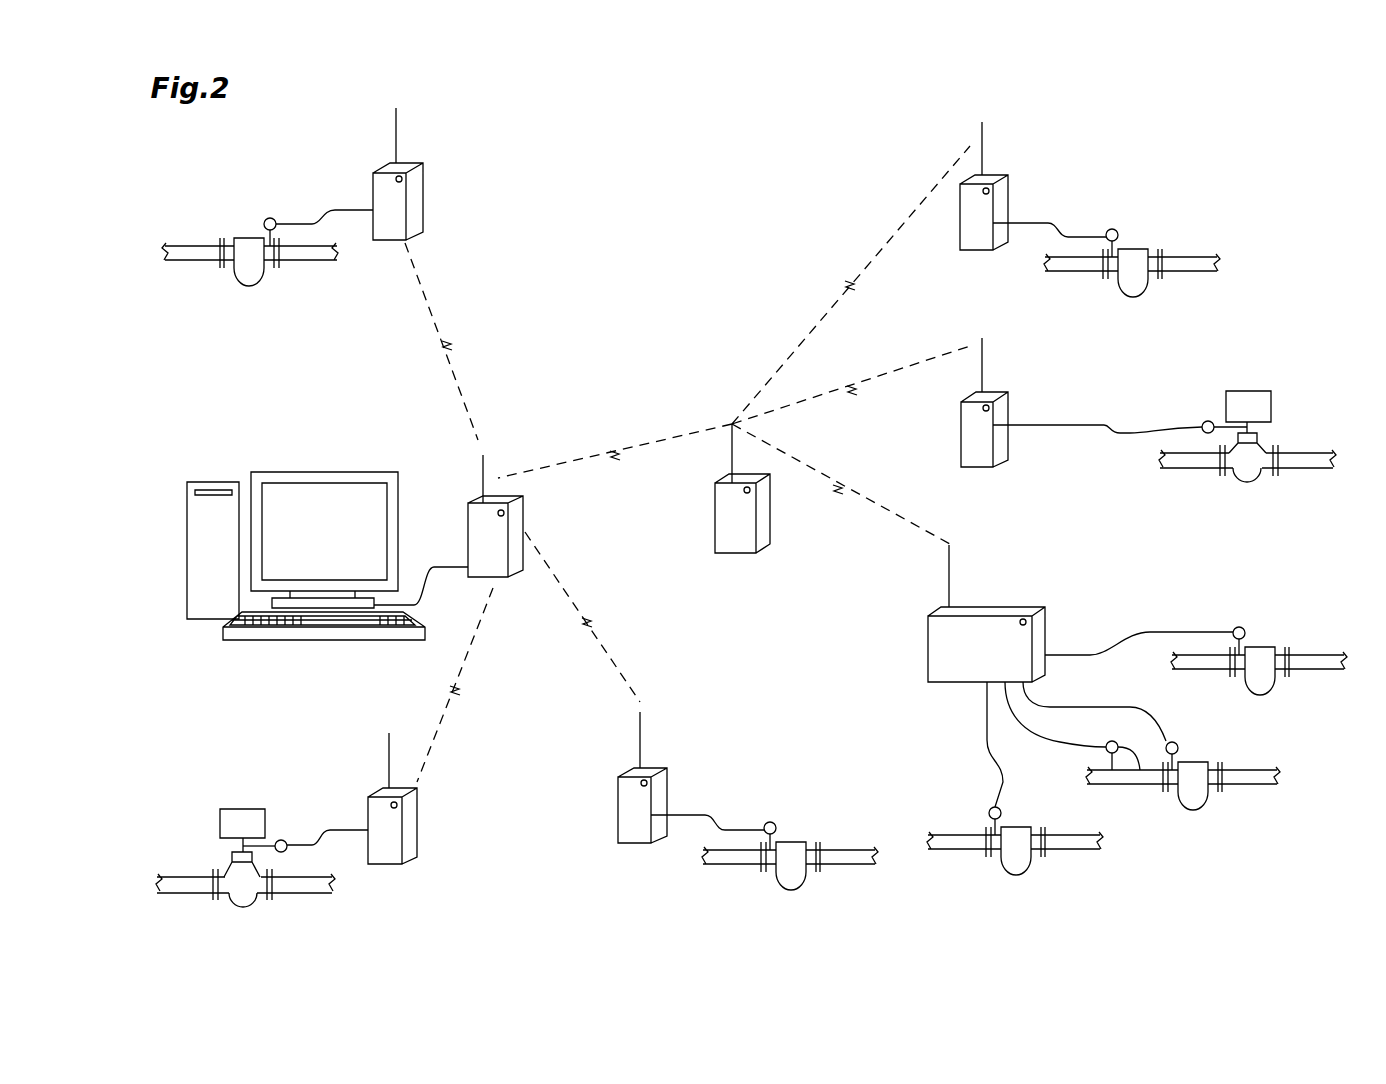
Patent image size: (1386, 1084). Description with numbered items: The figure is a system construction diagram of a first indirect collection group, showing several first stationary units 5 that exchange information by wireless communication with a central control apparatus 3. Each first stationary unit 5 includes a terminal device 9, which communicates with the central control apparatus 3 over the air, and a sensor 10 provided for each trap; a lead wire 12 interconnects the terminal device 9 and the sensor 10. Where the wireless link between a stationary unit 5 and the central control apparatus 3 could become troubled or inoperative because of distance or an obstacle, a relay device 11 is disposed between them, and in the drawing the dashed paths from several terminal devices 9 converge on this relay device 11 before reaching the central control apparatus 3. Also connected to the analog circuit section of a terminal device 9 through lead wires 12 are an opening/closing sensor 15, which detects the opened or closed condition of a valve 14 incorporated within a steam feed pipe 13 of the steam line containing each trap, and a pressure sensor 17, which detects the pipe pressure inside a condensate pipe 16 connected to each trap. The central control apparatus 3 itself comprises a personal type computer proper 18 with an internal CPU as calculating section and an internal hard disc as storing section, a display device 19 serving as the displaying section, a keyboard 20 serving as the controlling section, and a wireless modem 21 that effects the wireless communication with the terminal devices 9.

The central control apparatus 3 is at (306, 528).
The first stationary unit 5 is at (746, 521).
The terminal device 9 is at (413, 198).
The sensor 10 is at (268, 216).
The relay device 11 is at (762, 526).
The lead wire 12 is at (299, 220).
The steam feed pipe 13 is at (1183, 475).
The valve 14 is at (1262, 452).
The opening/closing sensor 15 is at (1207, 420).
The condensate pipe 16 is at (297, 260).
The pressure sensor 17 is at (1136, 772).
The personal type computer proper 18 is at (217, 482).
The display device 19 is at (323, 472).
The keyboard 20 is at (340, 622).
The wireless modem 21 is at (465, 540).